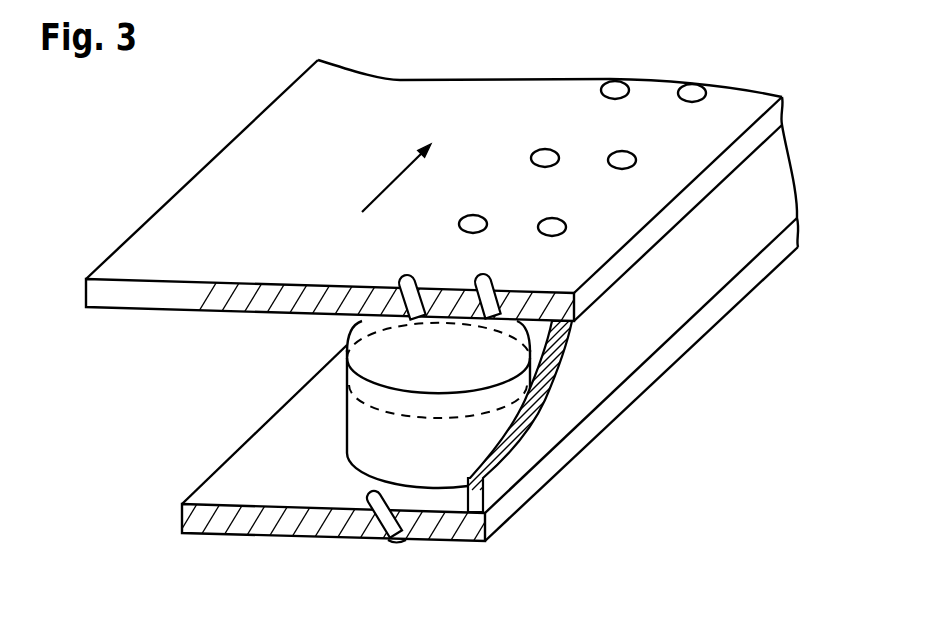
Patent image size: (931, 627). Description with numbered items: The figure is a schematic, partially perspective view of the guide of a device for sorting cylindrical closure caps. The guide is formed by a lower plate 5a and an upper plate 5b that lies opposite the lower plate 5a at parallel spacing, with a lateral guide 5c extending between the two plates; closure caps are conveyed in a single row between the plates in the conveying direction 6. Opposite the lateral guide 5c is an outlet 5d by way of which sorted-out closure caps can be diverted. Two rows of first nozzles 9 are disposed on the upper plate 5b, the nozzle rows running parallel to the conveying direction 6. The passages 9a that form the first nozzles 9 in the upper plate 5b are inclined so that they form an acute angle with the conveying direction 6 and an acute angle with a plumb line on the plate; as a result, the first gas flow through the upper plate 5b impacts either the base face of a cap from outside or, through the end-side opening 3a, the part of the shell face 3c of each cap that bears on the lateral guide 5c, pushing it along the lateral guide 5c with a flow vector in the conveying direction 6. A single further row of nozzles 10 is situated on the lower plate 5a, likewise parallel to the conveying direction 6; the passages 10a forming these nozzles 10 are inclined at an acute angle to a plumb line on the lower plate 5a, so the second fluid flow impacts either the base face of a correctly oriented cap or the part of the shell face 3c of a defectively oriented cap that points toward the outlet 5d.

The end-side opening 3a is at (378, 352).
The shell face 3c is at (445, 467).
The lower plate 5a is at (192, 522).
The upper plate 5b is at (252, 173).
The lateral guide 5c is at (722, 265).
The outlet 5d is at (205, 413).
The conveying direction 6 is at (394, 173).
The first nozzles 9 is at (636, 74).
The passages 9a is at (545, 157).
The nozzles 10 is at (405, 543).
The passages 10a is at (372, 500).